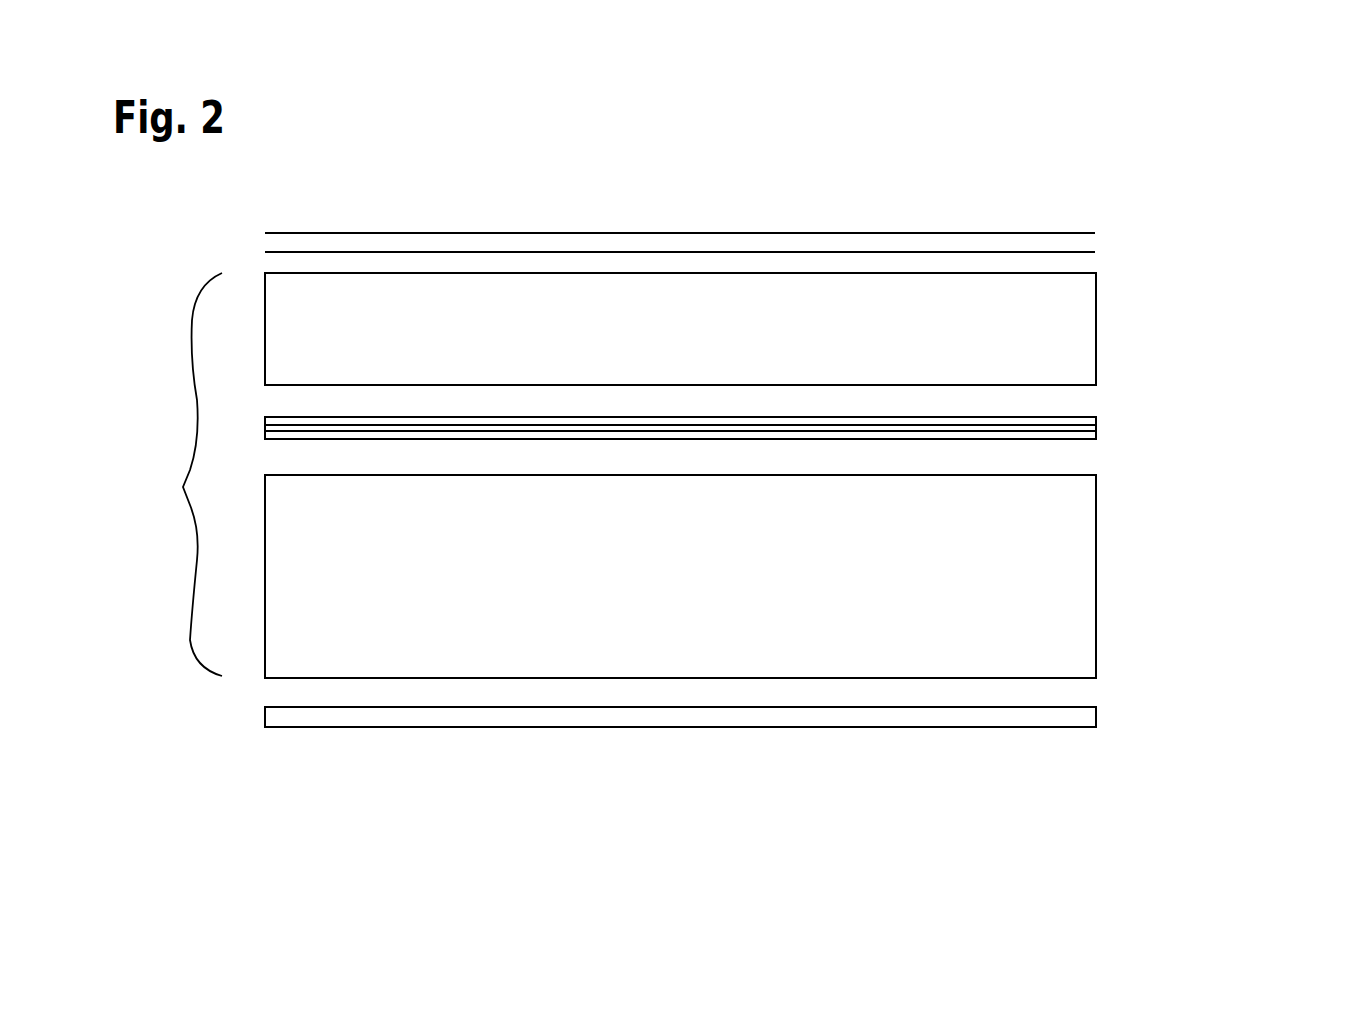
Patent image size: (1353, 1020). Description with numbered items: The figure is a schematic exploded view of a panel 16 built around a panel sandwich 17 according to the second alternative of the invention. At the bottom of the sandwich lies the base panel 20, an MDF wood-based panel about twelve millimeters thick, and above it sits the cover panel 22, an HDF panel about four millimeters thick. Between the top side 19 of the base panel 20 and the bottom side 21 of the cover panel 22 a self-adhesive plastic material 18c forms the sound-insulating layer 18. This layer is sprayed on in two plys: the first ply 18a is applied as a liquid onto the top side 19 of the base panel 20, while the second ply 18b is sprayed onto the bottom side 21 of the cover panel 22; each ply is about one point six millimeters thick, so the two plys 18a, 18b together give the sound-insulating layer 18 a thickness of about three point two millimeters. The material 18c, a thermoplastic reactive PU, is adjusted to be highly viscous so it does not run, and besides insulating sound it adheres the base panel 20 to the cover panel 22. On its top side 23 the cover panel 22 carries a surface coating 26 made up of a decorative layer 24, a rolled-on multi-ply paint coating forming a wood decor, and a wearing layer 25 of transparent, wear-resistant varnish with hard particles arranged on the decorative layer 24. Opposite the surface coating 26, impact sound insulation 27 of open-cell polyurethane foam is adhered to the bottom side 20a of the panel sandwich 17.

The panel 16 is at (674, 192).
The panel sandwich 17 is at (183, 474).
The sound-insulating layer 18 is at (261, 417).
The first ply 18a is at (1082, 420).
The second ply 18b is at (1082, 436).
The self-adhesive plastic material 18c is at (1118, 431).
The top side of base panel 19 is at (1090, 475).
The base panel 20 is at (1070, 628).
The bottom side 20a is at (1090, 678).
The bottom side of cover panel 21 is at (1118, 380).
The cover panel 22 is at (1058, 326).
The top side of cover panel 23 is at (1078, 273).
The decorative layer 24 is at (1093, 252).
The wearing layer 25 is at (1082, 233).
The surface coating 26 is at (224, 230).
The impact sound insulation 27 is at (1098, 716).